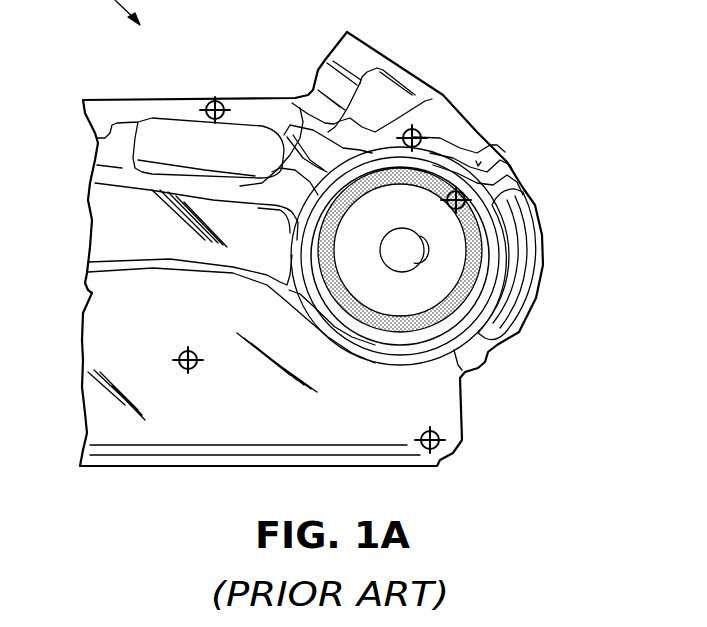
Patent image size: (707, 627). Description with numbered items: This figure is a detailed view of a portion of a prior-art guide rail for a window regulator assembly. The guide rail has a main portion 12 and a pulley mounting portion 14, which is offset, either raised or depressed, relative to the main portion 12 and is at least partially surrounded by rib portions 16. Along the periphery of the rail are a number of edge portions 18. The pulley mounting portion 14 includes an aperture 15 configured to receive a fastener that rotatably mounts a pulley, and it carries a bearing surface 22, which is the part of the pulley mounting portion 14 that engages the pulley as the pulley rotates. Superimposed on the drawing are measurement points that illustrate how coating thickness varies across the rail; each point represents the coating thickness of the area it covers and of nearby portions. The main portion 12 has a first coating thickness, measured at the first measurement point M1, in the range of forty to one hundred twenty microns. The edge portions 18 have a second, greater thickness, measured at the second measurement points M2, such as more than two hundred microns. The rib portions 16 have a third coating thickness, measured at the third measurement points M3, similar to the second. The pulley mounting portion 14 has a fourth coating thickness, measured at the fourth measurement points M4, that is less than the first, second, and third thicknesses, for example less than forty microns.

The main portion 12 is at (311, 284).
The pulley mounting portion 14 is at (370, 222).
The aperture 15 is at (427, 258).
The rib portions 16 is at (308, 115).
The edge portions 18 is at (233, 450).
The bearing surface 22 is at (447, 195).
The first measurement point M1 is at (180, 354).
The second measurement points M2 is at (210, 103).
The third measurement points M3 is at (413, 138).
The fourth measurement points M4 is at (460, 197).